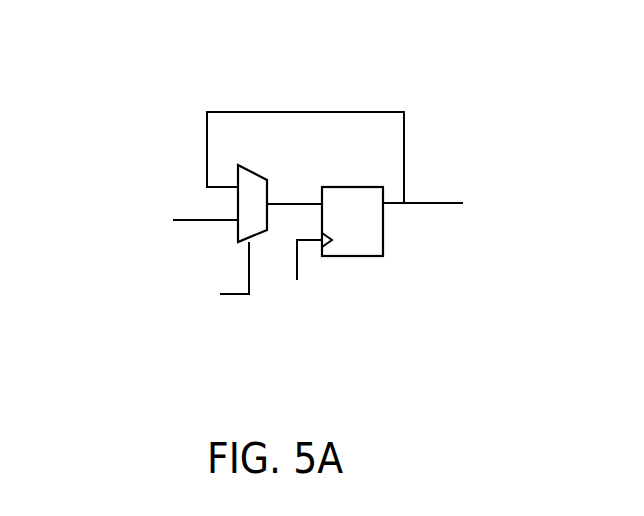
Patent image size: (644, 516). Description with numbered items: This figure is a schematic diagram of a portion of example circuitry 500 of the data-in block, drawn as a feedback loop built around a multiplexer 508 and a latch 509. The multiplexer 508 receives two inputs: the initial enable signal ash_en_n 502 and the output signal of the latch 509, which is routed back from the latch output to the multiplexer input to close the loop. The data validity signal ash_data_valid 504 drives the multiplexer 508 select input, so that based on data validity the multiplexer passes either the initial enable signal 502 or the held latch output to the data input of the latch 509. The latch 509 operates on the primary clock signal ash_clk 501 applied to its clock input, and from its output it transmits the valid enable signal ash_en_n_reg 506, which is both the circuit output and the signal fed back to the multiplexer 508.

The circuit 500 is at (142, 102).
The primary clock signal 501 is at (302, 315).
The initial enable signal 502 is at (138, 203).
The data validity signal 504 is at (140, 317).
The valid enable signal 506 is at (506, 182).
The multiplexer 508 is at (258, 173).
The latch 509 is at (383, 237).